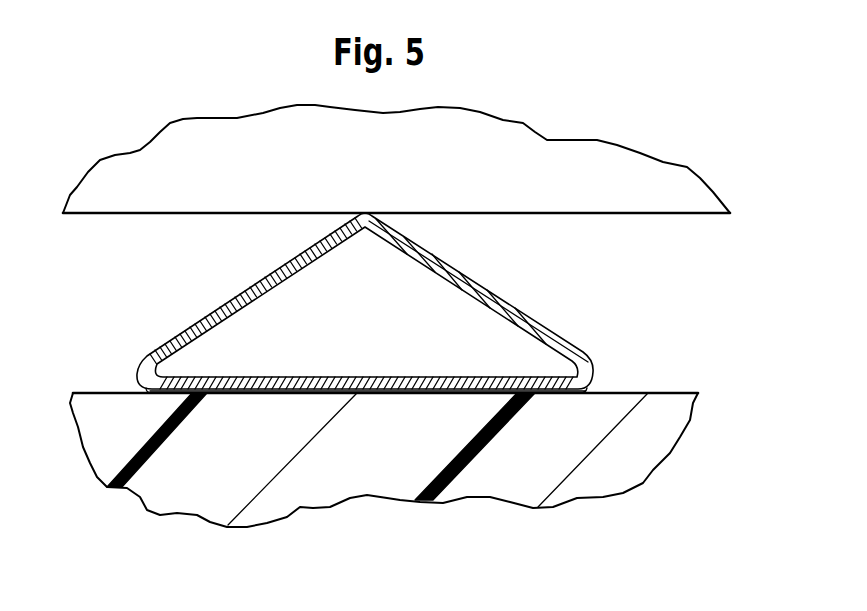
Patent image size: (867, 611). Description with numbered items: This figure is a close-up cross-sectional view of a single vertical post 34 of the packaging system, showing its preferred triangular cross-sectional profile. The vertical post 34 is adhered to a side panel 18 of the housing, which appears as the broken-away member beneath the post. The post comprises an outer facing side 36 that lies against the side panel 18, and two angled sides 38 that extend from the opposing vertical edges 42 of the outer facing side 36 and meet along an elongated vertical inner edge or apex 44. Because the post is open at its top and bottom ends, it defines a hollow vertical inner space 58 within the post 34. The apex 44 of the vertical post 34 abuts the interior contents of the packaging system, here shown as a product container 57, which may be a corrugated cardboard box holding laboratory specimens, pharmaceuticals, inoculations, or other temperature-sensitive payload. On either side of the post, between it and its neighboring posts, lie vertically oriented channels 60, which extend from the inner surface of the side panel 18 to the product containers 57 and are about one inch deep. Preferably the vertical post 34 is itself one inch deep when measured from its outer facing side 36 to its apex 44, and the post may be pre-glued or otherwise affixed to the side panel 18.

The side panel 18 is at (382, 460).
The vertical post 34 is at (525, 307).
The outer facing side 36 is at (261, 380).
The angled sides 38 is at (246, 281).
The vertical edges 42 is at (142, 366).
The vertical inner edge or apex 44 is at (365, 212).
The product container 57 is at (429, 175).
The vertical inner space 58 is at (379, 319).
The vertically oriented channel 60 is at (147, 318).